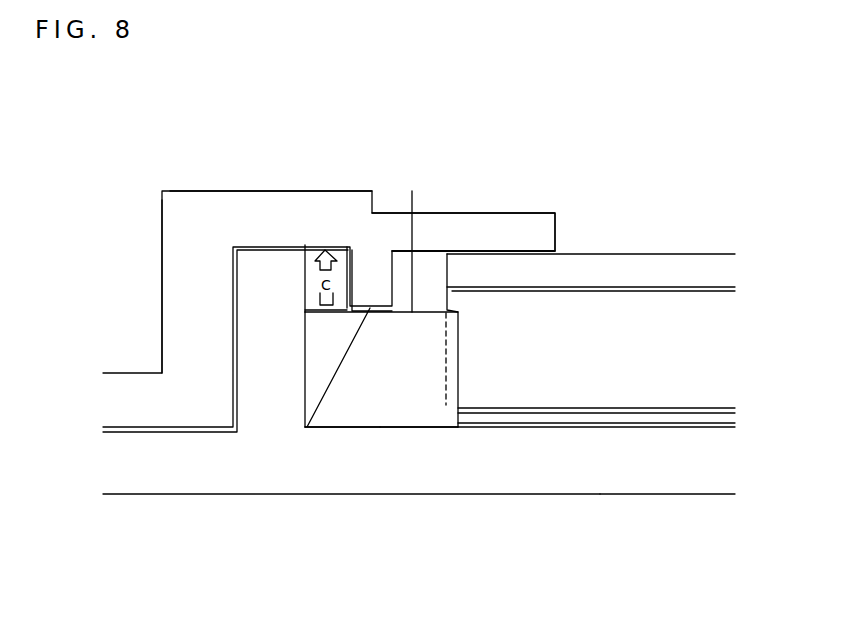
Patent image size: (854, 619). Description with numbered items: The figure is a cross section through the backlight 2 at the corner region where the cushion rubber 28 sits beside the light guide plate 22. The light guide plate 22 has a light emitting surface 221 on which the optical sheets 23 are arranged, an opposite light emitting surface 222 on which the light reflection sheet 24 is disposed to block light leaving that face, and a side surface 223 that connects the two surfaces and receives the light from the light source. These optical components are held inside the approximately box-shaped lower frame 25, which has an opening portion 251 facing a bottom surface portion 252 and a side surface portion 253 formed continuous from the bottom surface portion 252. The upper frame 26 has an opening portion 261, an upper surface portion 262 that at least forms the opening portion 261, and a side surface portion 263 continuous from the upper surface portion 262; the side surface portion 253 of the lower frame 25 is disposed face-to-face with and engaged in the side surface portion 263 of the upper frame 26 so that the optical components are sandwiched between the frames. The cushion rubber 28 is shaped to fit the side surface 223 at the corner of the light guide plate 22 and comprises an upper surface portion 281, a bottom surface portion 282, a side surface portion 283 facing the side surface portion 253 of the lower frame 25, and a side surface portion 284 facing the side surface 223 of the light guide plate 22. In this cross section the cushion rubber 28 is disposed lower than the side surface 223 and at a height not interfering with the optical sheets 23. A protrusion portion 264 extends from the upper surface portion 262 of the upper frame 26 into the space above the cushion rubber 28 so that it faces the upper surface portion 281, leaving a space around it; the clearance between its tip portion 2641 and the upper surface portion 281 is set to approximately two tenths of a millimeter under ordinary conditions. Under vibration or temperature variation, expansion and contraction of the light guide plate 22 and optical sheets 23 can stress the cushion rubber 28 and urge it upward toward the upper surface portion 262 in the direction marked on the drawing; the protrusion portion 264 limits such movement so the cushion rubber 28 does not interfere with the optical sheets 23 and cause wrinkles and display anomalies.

The backlight 2 is at (768, 467).
The light guide plate 22 is at (634, 344).
The light emitting surface 221 is at (695, 287).
The opposite light emitting surface 222 is at (623, 407).
The side surface 223 is at (447, 308).
The optical sheets 23 is at (687, 258).
The light reflection sheet 24 is at (723, 415).
The lower frame 25 is at (374, 352).
The opening portion 251 is at (575, 247).
The bottom surface portion 252 is at (348, 432).
The side surface portion 253 is at (305, 417).
The upper frame 26 is at (408, 319).
The opening portion 261 is at (642, 243).
The upper surface portion 262 is at (268, 225).
The side surface portion 263 is at (175, 253).
The protrusion portion 264 is at (357, 270).
The tip portion 2641 is at (305, 432).
The cushion rubber 28 is at (430, 435).
The upper surface portion 281 is at (411, 196).
The bottom surface portion 282 is at (420, 413).
The side surface portion 283 is at (305, 370).
The side surface portion 284 is at (465, 430).